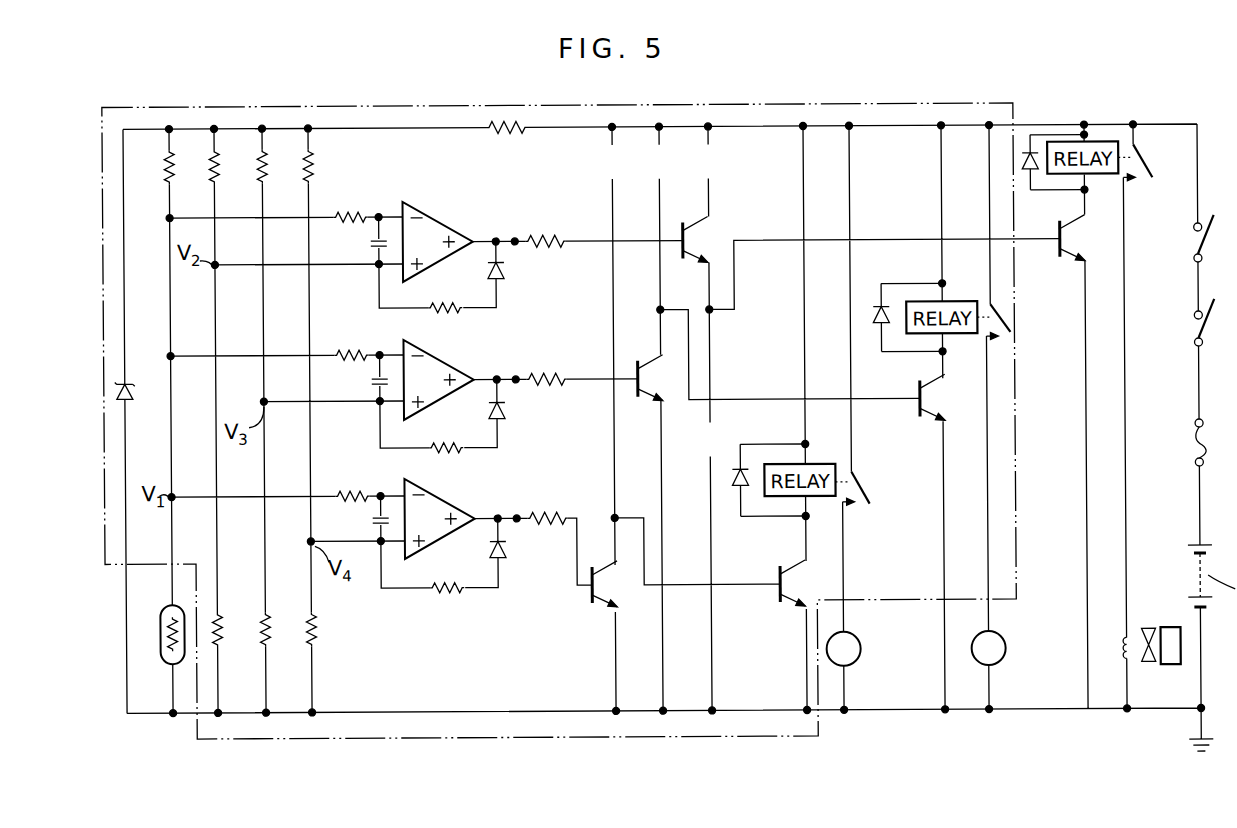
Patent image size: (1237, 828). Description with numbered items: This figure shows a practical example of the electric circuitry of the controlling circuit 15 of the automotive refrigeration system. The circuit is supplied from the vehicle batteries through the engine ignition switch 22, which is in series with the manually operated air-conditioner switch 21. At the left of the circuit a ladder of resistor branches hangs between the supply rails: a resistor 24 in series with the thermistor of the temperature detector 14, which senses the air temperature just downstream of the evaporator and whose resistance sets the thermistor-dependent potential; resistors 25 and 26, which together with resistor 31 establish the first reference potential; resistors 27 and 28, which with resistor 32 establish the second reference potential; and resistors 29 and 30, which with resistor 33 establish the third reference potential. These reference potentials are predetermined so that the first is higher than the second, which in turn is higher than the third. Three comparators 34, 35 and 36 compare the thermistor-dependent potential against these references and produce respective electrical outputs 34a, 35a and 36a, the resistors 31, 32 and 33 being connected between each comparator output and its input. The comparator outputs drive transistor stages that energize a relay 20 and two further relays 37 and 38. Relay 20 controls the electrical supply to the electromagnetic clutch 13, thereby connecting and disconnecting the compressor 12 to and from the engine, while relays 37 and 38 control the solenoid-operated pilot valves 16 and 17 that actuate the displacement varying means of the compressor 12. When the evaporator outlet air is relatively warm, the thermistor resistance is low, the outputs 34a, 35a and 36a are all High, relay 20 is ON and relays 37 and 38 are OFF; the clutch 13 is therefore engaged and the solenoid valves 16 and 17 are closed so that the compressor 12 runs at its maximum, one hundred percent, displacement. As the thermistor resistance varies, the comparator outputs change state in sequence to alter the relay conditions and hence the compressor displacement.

The compressor 12 is at (1168, 668).
The electromagnetic clutch 13 is at (1129, 636).
The temperature detector 14 is at (157, 636).
The controlling circuit 15 is at (606, 737).
The solenoid-operated pilot valve 16 is at (856, 641).
The solenoid-operated pilot valve 17 is at (1001, 641).
The relay 20 is at (1098, 143).
The air-conditioner switch 21 is at (1193, 262).
The engine ignition switch 22 is at (1193, 345).
The resistor 24 is at (164, 170).
The resistor 25 is at (209, 170).
The resistor 26 is at (220, 638).
The resistor 27 is at (257, 170).
The resistor 28 is at (268, 638).
The resistor 29 is at (313, 166).
The resistor 30 is at (314, 638).
The resistor 31 is at (440, 303).
The resistor 32 is at (447, 452).
The resistor 33 is at (454, 586).
The comparator 34 is at (446, 224).
The electrical output 34a is at (516, 239).
The comparator 35 is at (441, 364).
The electrical output 35a is at (514, 377).
The comparator 36 is at (445, 500).
The electrical output 36a is at (516, 515).
The relay 37 is at (958, 302).
The relay 38 is at (818, 465).